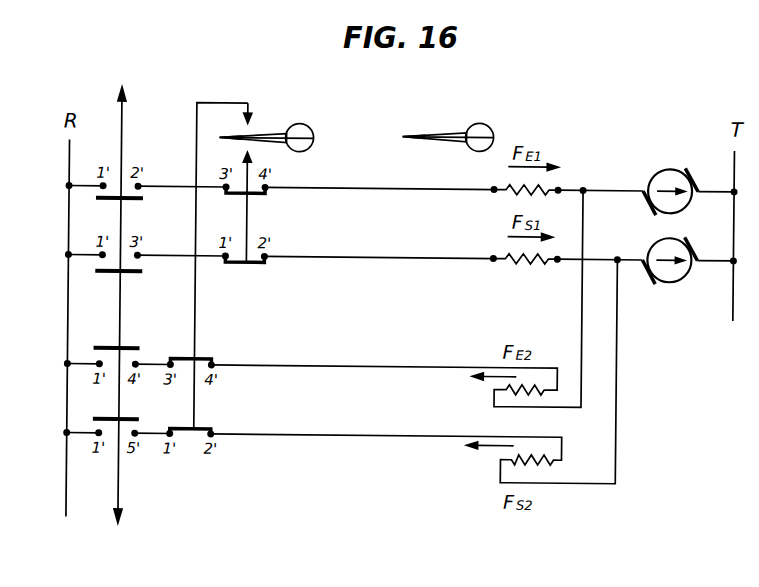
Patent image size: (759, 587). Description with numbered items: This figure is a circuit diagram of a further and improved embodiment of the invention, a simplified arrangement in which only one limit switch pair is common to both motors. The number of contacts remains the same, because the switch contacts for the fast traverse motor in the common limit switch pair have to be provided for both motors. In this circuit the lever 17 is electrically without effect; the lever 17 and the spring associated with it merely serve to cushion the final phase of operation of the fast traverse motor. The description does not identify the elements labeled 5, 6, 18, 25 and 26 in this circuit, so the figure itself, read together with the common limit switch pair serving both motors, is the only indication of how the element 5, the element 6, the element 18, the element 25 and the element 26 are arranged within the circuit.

The first measuring instrument 5 is at (658, 172).
The second measuring instrument 6 is at (679, 277).
The lever 17 is at (483, 123).
The pointer of instrument 18 is at (303, 127).
The arrow indicating direction 25 is at (240, 121).
The arrow indicating direction 26 is at (249, 151).